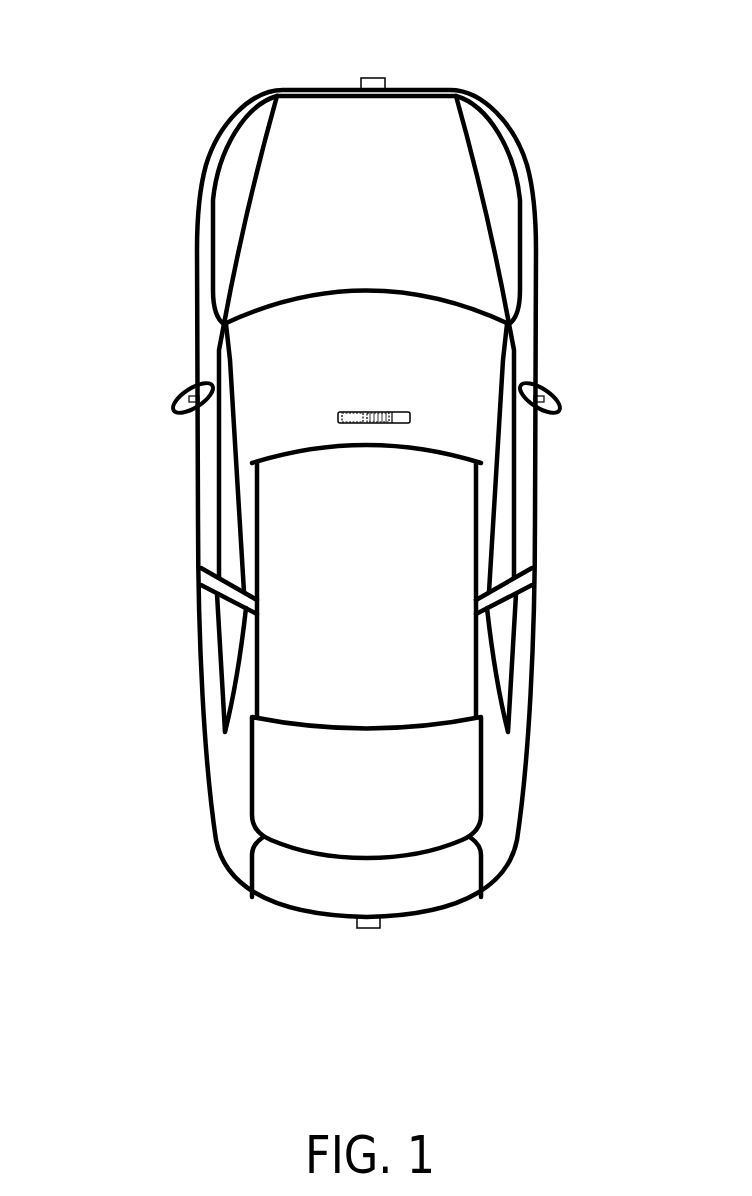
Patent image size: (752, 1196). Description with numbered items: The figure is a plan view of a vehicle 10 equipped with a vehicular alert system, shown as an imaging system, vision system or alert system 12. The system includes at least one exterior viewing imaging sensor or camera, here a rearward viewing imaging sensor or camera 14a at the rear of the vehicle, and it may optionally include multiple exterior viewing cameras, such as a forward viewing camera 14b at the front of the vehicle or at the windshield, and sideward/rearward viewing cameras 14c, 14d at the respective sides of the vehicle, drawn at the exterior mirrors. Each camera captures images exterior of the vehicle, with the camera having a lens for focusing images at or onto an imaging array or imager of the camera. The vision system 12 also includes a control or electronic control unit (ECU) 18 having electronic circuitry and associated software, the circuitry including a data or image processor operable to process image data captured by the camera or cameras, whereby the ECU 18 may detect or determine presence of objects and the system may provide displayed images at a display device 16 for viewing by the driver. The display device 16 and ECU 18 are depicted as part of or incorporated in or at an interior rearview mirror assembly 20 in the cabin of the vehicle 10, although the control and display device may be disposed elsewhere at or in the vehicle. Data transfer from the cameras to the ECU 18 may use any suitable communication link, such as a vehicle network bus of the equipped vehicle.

The vehicle 10 is at (128, 98).
The alert system 12 is at (320, 942).
The rearward viewing camera 14a is at (373, 930).
The forward viewing camera 14b is at (378, 77).
The sideward/rearward viewing camera 14c is at (183, 394).
The sideward/rearward viewing camera 14d is at (553, 391).
The display device 16 is at (350, 411).
The electronic control unit 18 is at (374, 411).
The interior rearview mirror assembly 20 is at (410, 412).